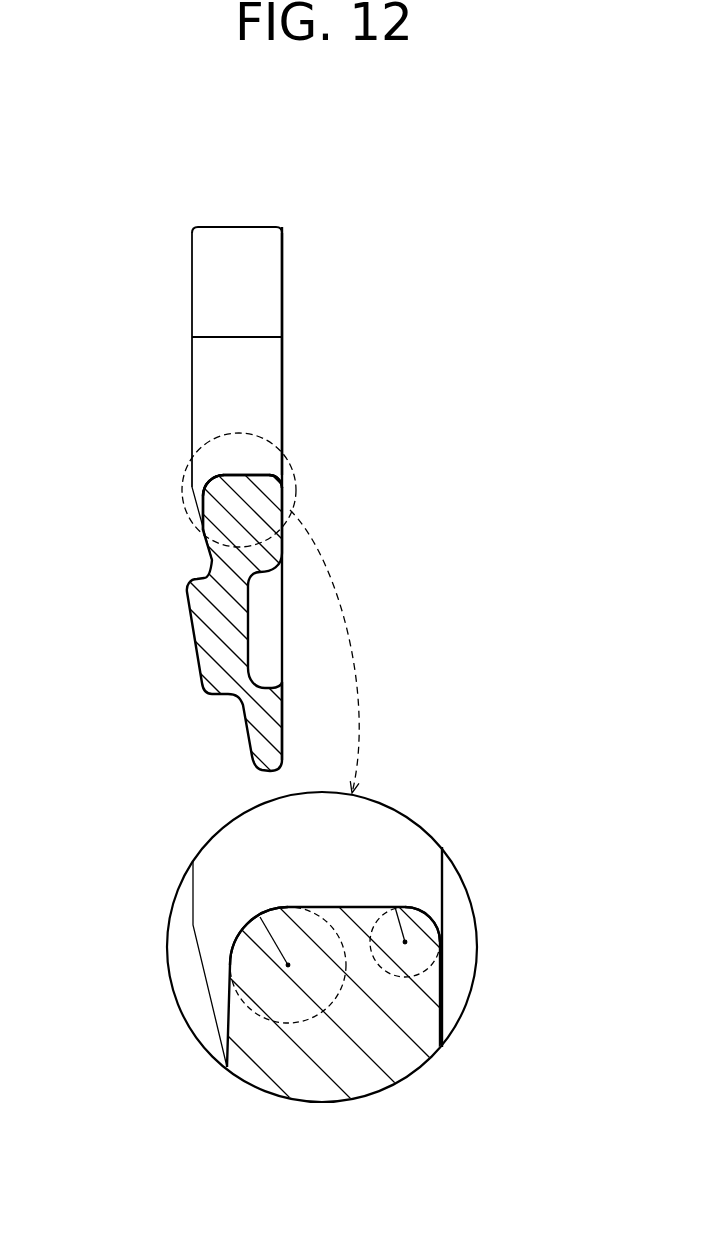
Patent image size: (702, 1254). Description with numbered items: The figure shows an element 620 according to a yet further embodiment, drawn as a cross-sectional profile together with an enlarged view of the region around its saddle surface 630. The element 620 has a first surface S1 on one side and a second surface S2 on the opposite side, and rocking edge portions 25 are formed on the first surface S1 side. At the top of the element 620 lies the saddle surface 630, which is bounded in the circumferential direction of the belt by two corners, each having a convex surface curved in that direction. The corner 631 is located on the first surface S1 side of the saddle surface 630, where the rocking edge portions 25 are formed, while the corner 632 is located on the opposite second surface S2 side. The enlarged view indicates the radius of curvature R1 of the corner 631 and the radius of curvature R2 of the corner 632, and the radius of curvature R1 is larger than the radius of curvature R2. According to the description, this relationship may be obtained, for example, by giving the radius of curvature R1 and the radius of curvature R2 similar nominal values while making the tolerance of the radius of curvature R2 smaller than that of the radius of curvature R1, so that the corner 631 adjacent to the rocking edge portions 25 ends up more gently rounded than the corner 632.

The element 620 is at (302, 243).
The saddle surface 630 is at (248, 475).
The corner 631 is at (190, 489).
The corner 632 is at (283, 476).
The rocking edge portions 25 is at (190, 485).
The first surface S1 is at (188, 458).
The second surface S2 is at (288, 455).
The radius of curvature R1 is at (288, 965).
The radius of curvature R2 is at (405, 942).